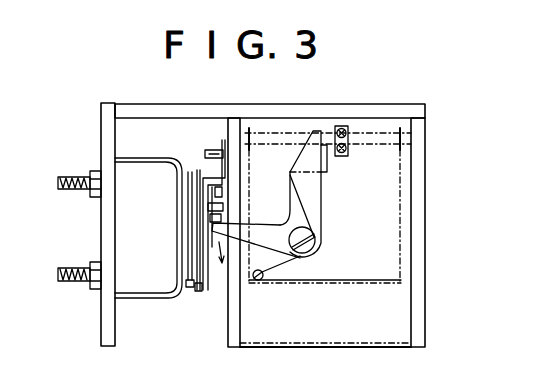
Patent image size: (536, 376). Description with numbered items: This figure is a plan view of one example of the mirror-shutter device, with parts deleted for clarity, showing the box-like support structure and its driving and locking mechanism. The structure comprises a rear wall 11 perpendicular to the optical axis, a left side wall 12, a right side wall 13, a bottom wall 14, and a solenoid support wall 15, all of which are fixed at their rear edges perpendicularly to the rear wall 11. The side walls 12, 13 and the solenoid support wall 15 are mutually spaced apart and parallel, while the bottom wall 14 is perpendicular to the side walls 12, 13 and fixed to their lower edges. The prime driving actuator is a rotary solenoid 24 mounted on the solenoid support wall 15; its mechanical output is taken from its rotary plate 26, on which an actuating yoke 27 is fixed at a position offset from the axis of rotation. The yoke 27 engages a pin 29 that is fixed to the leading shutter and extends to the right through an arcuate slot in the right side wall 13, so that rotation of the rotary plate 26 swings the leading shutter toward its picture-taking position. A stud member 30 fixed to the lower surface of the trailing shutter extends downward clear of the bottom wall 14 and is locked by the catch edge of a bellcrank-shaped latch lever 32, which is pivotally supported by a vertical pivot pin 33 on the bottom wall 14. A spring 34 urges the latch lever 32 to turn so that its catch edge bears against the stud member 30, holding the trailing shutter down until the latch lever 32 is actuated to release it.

The rear wall 11 is at (282, 116).
The left side wall 12 is at (420, 311).
The right side wall 13 is at (232, 323).
The bottom wall 14 is at (385, 341).
The solenoid support wall 15 is at (108, 133).
The rotary solenoid 24 is at (142, 300).
The rotary plate 26 is at (195, 180).
The actuating yoke 27 is at (214, 170).
The pin 29 is at (213, 150).
The stud member 30 is at (328, 134).
The latch lever 32 is at (315, 188).
The vertical pivot pin 33 is at (318, 241).
The spring 34 is at (283, 262).